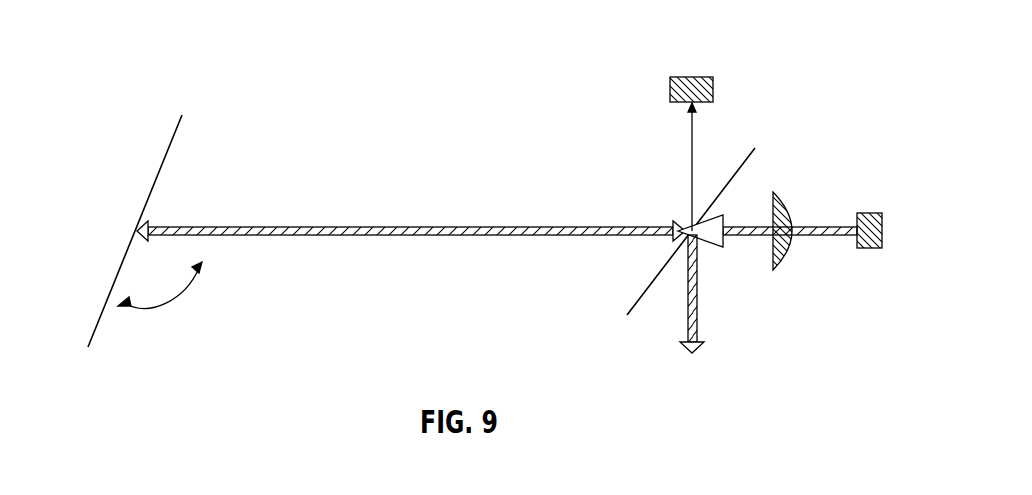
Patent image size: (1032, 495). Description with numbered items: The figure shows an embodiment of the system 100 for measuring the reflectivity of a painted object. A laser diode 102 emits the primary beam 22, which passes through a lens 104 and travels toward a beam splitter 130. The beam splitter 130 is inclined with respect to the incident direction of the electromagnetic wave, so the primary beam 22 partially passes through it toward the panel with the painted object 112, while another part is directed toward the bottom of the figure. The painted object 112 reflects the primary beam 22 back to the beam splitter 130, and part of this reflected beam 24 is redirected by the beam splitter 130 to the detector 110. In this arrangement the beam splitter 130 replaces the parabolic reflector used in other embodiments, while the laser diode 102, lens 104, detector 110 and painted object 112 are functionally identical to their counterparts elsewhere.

The system 100 is at (132, 58).
The painted object 112 is at (157, 170).
The beam splitter 130 is at (742, 165).
The primary beam 22 is at (745, 227).
The reflected beam 24 is at (692, 167).
The detector 110 is at (692, 76).
The laser diode 102 is at (863, 213).
The lens 104 is at (771, 250).